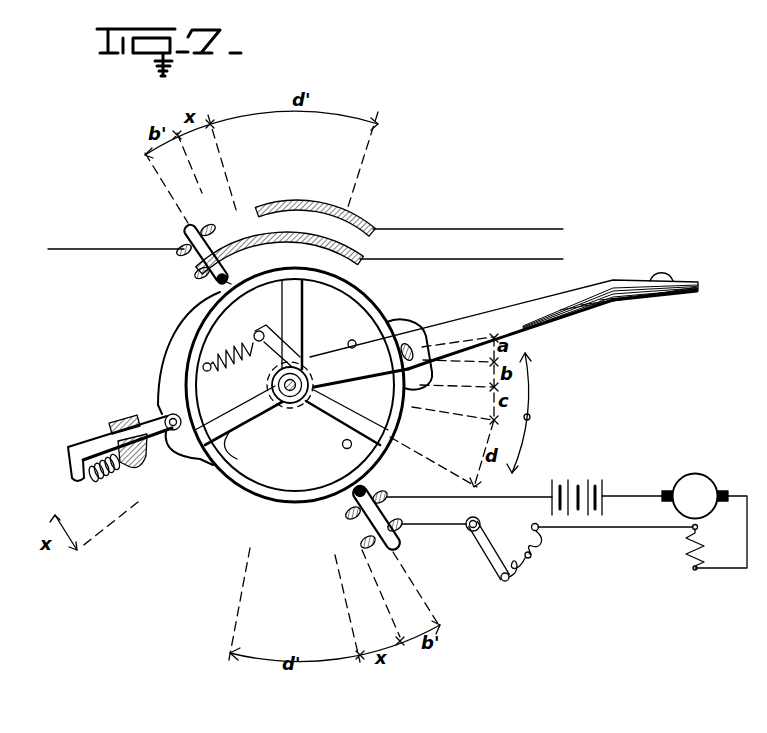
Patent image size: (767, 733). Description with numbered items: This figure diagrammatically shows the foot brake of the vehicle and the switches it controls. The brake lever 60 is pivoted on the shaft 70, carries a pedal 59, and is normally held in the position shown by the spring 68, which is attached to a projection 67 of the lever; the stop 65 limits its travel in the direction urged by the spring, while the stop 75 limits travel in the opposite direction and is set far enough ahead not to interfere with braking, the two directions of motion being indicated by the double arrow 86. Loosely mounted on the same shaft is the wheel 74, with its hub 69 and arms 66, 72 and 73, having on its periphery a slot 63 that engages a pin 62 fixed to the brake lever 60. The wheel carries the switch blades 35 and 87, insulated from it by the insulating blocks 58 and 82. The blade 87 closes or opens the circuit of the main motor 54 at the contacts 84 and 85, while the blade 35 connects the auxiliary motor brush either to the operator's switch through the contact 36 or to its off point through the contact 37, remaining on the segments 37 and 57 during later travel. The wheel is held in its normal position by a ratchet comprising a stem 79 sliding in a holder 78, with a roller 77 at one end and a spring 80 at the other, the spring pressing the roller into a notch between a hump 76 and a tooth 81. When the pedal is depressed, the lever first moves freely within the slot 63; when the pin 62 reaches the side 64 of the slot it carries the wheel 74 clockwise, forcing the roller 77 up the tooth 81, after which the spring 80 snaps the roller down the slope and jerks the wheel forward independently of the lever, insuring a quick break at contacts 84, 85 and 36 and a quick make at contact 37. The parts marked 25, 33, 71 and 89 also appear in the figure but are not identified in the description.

The switch link 25 is at (530, 559).
The battery 33 is at (580, 478).
The switch blade 35 is at (203, 262).
The contact 36 is at (208, 226).
The contact 37 is at (300, 206).
The main motor 54 is at (642, 522).
The segment 57 is at (362, 255).
The insulating block 58 is at (220, 287).
The pedal 59 is at (667, 278).
The brake lever 60 is at (549, 307).
The pin 62 is at (409, 344).
The slot 63 is at (361, 386).
The side of slot 64 is at (428, 383).
The stop 65 is at (352, 341).
The arm 66 is at (291, 322).
The projection 67 is at (260, 342).
The spring 68 is at (225, 366).
The hub 69 is at (300, 380).
The shaft 70 is at (289, 391).
The spoke 71 is at (282, 398).
The arm 72 is at (313, 396).
The arm 73 is at (245, 453).
The wheel 74 is at (262, 494).
The stop 75 is at (344, 449).
The hump 76 is at (160, 358).
The roller 77 is at (166, 418).
The holder 78 is at (120, 421).
The ratchet stem 79 is at (92, 448).
The spring 80 is at (98, 481).
The tooth 81 is at (175, 448).
The insulating block 82 is at (350, 499).
The contact 84 is at (383, 491).
The contact 85 is at (404, 522).
The double arrow 86 is at (530, 417).
The switch blade 87 is at (365, 528).
The conductor 89 is at (120, 258).